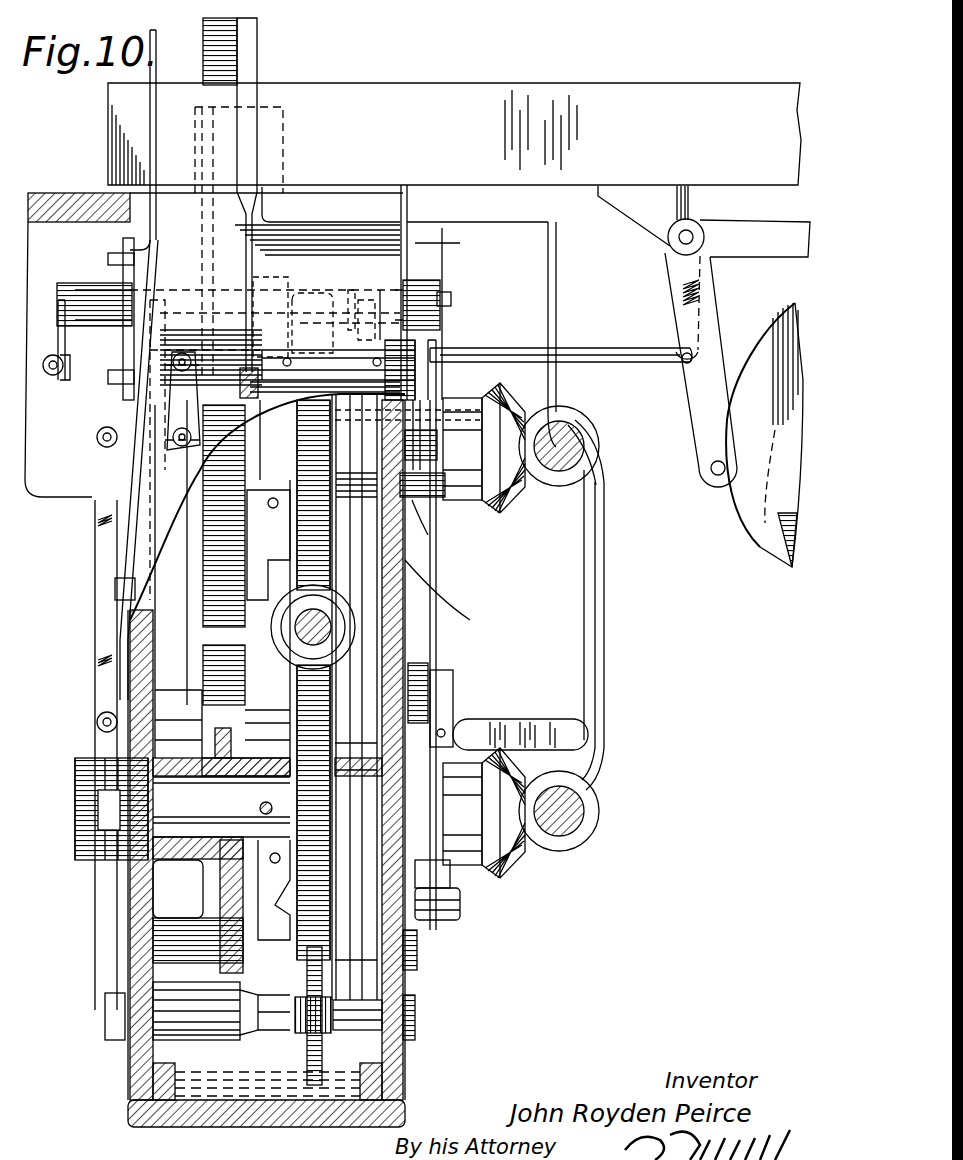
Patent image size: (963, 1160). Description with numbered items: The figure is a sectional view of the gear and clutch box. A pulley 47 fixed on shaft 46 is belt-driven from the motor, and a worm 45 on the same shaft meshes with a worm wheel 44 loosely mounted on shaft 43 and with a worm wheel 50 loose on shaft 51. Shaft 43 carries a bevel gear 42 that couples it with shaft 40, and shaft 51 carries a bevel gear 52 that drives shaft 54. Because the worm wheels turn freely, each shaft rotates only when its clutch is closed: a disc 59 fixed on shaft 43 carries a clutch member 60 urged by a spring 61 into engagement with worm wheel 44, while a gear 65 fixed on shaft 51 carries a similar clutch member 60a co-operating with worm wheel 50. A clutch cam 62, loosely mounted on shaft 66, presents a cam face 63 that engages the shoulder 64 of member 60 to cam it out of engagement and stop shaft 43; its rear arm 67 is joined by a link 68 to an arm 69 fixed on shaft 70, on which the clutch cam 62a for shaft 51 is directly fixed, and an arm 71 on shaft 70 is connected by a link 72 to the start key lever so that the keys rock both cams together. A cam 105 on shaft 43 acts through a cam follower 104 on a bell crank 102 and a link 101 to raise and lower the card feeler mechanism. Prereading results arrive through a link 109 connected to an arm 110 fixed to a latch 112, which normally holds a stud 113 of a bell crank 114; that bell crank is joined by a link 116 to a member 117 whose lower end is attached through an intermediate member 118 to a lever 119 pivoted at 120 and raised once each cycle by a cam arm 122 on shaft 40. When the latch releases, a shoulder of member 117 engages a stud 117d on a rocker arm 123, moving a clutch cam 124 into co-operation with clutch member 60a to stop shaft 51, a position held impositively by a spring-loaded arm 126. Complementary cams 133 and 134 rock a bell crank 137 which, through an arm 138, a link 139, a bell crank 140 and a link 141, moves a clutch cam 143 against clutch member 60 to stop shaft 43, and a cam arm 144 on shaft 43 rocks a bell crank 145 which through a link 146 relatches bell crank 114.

The shaft 40 is at (582, 837).
The bevel gear 42 is at (515, 851).
The shaft 43 is at (90, 821).
The worm wheel 44 is at (313, 691).
The worm 45 is at (290, 646).
The shaft 46 is at (313, 627).
The pulley 47 is at (412, 594).
The worm wheel 50 is at (316, 553).
The shaft 51 is at (470, 441).
The bevel gear 52 is at (526, 421).
The shaft 54 is at (566, 448).
The disc or wheel 59 is at (228, 863).
The clutch member 60 is at (262, 881).
The clutch member 60a is at (262, 556).
The spring 61 is at (221, 807).
The clutch cam 62 is at (268, 1015).
The clutch cam 62a is at (270, 289).
The cam face 63 is at (325, 919).
The shoulder 64 is at (250, 963).
The gear 65 is at (222, 546).
The shaft 66 is at (405, 1041).
The rear arm 67 is at (342, 1040).
The link 68 is at (405, 956).
The arm 69 is at (343, 301).
The shaft 70 is at (118, 290).
The arm 71 is at (62, 333).
The link 72 is at (58, 376).
The link 101 is at (145, 414).
The bell crank 102 is at (128, 631).
The cam follower 104 is at (105, 801).
The cam 105 is at (115, 691).
The link 109 is at (252, 217).
The arm 110 is at (248, 380).
The latch 112 is at (416, 393).
The stud 113 is at (442, 498).
The bell crank 114 is at (430, 416).
The link 116 is at (432, 386).
The arm 117 is at (438, 566).
The stud 117d is at (450, 299).
The intermediate member 118 is at (450, 693).
The lever 119 is at (475, 723).
The pivot 120 is at (97, 726).
The cam arm 122 is at (560, 763).
The rocker arm 123 is at (432, 303).
The clutch cam 124 is at (252, 423).
The arm 126 is at (125, 357).
The cam 133 is at (753, 531).
The cam 134 is at (788, 541).
The bell crank 137 is at (718, 351).
The arm 138 is at (683, 308).
The link 139 is at (614, 357).
The bell crank 140 is at (100, 440).
The link 141 is at (103, 536).
The clutch cam 143 is at (258, 775).
The cam arm 144 is at (455, 906).
The bell crank 145 is at (450, 886).
The link 146 is at (427, 541).